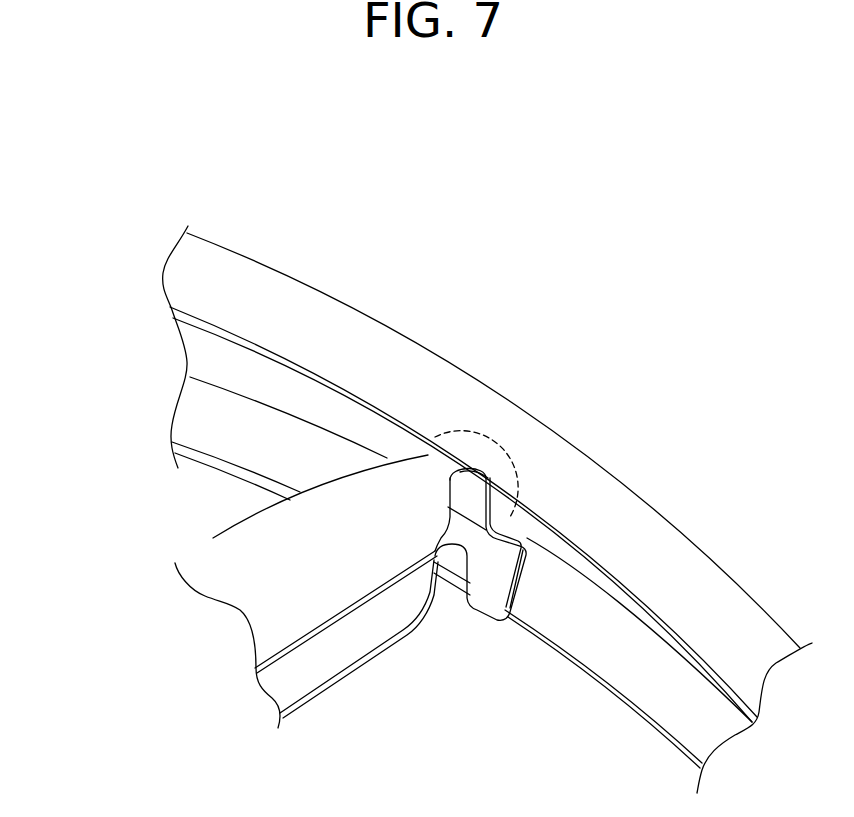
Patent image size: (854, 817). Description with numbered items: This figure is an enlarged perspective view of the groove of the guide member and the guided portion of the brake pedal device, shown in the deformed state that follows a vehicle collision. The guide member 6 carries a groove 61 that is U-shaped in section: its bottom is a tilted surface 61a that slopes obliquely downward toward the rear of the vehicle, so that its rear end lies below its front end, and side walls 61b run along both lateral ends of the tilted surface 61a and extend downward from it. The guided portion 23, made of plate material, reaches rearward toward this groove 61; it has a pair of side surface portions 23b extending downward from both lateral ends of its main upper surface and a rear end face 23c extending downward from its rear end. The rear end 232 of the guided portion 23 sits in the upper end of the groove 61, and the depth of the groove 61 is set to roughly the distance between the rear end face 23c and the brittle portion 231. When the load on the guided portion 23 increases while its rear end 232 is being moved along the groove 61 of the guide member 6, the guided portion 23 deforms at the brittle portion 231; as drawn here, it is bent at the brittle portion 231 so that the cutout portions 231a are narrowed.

The guide member 6 is at (327, 320).
The groove 61 is at (449, 362).
The tilted surface 61a is at (208, 348).
The side walls 61b is at (197, 270).
The guided portion 23 is at (225, 550).
The side surface portions 23b is at (252, 593).
The rear end face 23c is at (522, 577).
The brittle portion 231 is at (450, 607).
The cutout portions 231a is at (432, 587).
The rear end 232 is at (507, 520).